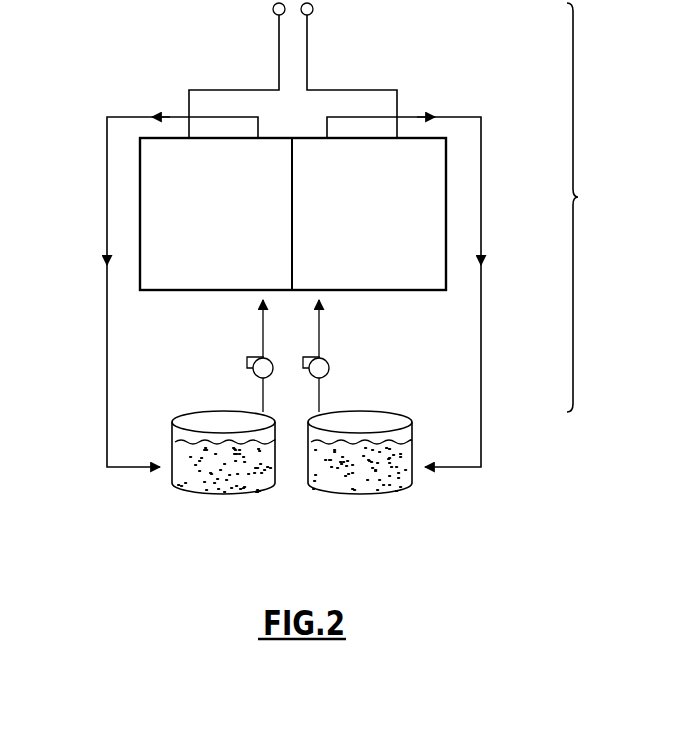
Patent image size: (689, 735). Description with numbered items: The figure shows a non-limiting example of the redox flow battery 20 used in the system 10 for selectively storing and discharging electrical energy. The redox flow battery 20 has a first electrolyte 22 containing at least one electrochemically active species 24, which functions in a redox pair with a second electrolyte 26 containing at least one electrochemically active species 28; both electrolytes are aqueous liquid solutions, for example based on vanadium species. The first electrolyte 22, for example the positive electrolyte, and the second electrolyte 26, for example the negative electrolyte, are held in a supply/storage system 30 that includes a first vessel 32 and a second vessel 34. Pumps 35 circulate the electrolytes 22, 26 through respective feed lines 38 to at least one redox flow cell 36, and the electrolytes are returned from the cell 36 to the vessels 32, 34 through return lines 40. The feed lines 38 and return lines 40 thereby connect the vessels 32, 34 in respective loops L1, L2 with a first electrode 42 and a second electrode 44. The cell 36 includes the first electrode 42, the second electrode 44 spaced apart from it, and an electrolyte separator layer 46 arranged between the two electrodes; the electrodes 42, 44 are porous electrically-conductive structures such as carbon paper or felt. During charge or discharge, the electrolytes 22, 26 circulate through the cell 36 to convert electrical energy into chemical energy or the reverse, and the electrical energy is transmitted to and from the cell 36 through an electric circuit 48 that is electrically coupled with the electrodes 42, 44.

The system 10 is at (586, 207).
The redox flow battery 20 is at (60, 318).
The first electrolyte 22 is at (373, 485).
The electrochemically active species 24 is at (338, 480).
The second electrolyte 26 is at (180, 483).
The electrochemically active species 28 is at (233, 477).
The supply/storage system 30 is at (289, 455).
The first vessel 32 is at (199, 466).
The second vessel 34 is at (382, 470).
The pumps 35 is at (276, 360).
The redox flow cell 36 is at (382, 300).
The feed lines 38 is at (262, 357).
The return lines 40 is at (107, 217).
The first electrode 42 is at (327, 245).
The second electrode 44 is at (172, 291).
The electrolyte separator layer 46 is at (293, 182).
The electric circuit 48 is at (380, 50).
The loop L1 is at (461, 100).
The loop L2 is at (127, 100).